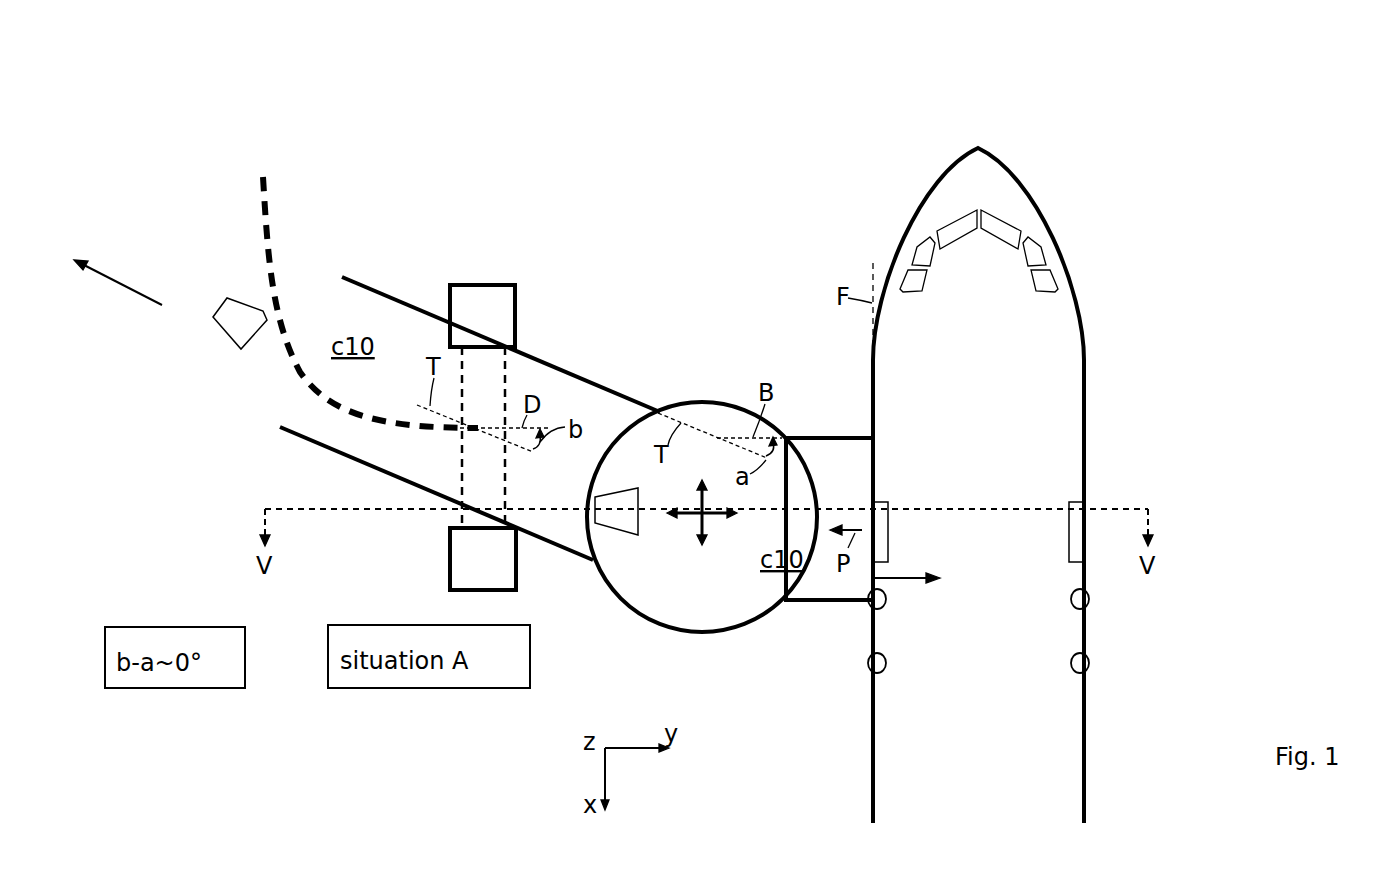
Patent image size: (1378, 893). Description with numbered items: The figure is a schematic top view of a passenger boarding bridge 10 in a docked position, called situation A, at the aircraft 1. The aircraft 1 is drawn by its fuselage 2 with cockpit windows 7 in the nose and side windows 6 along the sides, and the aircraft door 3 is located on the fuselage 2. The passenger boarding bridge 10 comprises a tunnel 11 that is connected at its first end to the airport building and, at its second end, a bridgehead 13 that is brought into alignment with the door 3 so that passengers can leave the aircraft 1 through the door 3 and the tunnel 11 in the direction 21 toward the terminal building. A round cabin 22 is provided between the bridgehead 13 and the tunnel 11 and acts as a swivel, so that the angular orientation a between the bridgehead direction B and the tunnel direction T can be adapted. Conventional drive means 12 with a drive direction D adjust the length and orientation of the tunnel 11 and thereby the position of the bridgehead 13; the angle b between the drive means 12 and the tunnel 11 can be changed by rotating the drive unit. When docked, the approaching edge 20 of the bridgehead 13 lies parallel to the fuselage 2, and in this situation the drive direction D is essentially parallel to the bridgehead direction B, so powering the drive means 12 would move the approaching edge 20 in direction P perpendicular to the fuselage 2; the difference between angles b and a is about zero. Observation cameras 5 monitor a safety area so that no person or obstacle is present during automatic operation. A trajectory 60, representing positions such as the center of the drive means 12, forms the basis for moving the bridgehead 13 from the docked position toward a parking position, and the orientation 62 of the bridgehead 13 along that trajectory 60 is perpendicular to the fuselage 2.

The aircraft 1 is at (1262, 260).
The aircraft fuselage 2 is at (1086, 458).
The aircraft door 3 is at (888, 505).
The observation camera 5 is at (425, 416).
The side window 6 is at (870, 664).
The cockpit window 7 is at (924, 258).
The passenger boarding bridge 10 is at (226, 122).
The tunnel 11 is at (470, 418).
The drive means 12 is at (517, 320).
The bridgehead 13 is at (829, 519).
The approaching edge 20 is at (868, 448).
The direction to terminal building 21 is at (101, 274).
The round cabin 22 is at (656, 630).
The trajectory 60 is at (280, 343).
The orientation 62 is at (917, 575).